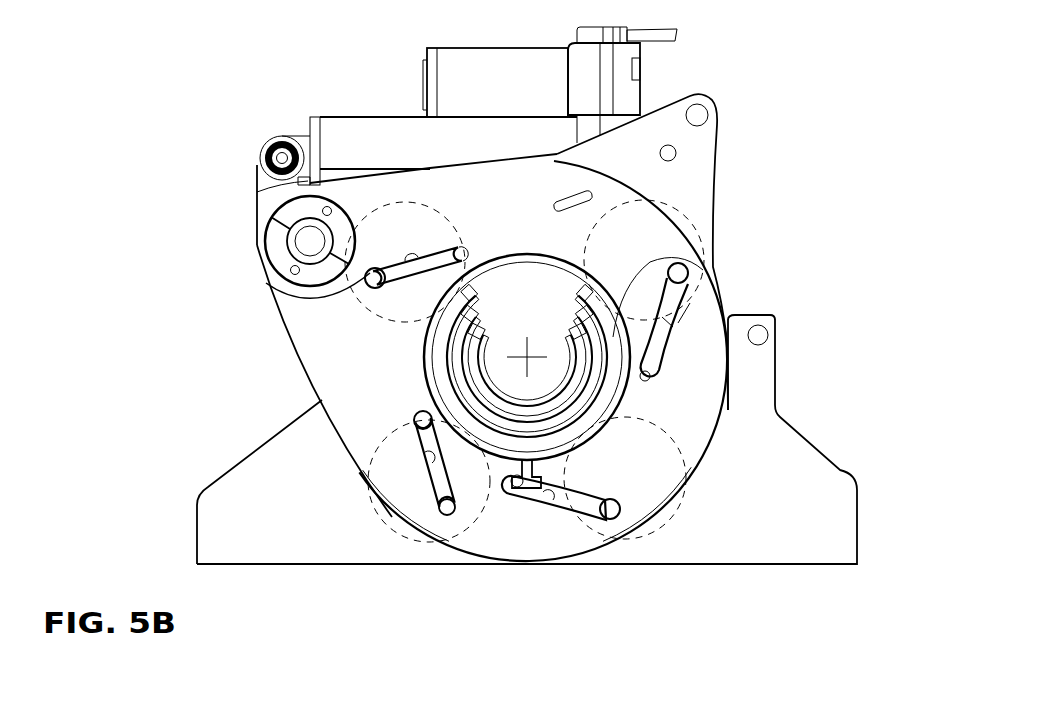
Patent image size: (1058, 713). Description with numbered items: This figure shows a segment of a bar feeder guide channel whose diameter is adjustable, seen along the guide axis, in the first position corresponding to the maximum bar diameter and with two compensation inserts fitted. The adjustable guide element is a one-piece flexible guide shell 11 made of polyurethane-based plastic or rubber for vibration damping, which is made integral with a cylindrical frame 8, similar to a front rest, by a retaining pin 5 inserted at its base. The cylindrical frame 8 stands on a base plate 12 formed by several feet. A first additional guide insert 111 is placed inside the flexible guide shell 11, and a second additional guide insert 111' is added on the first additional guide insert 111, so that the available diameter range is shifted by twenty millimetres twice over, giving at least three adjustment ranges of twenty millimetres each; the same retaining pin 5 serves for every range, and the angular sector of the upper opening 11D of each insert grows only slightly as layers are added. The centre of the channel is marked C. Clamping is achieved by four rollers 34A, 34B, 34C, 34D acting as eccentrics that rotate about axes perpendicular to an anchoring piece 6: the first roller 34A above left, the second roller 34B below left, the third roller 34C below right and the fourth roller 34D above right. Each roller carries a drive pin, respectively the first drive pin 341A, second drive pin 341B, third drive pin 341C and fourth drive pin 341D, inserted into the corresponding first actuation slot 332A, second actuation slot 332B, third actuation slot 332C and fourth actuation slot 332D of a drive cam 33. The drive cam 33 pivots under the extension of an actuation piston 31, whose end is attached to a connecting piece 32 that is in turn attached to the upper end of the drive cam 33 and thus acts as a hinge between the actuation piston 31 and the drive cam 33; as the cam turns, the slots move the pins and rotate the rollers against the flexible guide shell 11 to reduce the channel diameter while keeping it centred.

The retaining pin 5 is at (517, 497).
The anchoring piece 6 is at (708, 147).
The cylindrical frame 8 is at (420, 367).
The flexible guide shell 11 is at (655, 410).
The first additional guide insert 111 is at (628, 315).
The second additional guide insert 111' is at (719, 351).
The upper opening 11D is at (528, 308).
The base plate 12 is at (815, 513).
The actuation piston 31 is at (356, 132).
The connecting piece 32 is at (262, 183).
The drive cam 33 is at (497, 201).
The first roller 34A is at (285, 297).
The second roller 34B is at (390, 523).
The third roller 34C is at (663, 527).
The fourth roller 34D is at (693, 210).
The first drive pin 341A is at (350, 297).
The second drive pin 341B is at (443, 513).
The third drive pin 341C is at (614, 517).
The fourth drive pin 341D is at (688, 270).
The first actuation slot 332A is at (392, 285).
The second actuation slot 332B is at (422, 460).
The third actuation slot 332C is at (547, 498).
The fourth actuation slot 332D is at (685, 322).
The center axis C is at (527, 350).